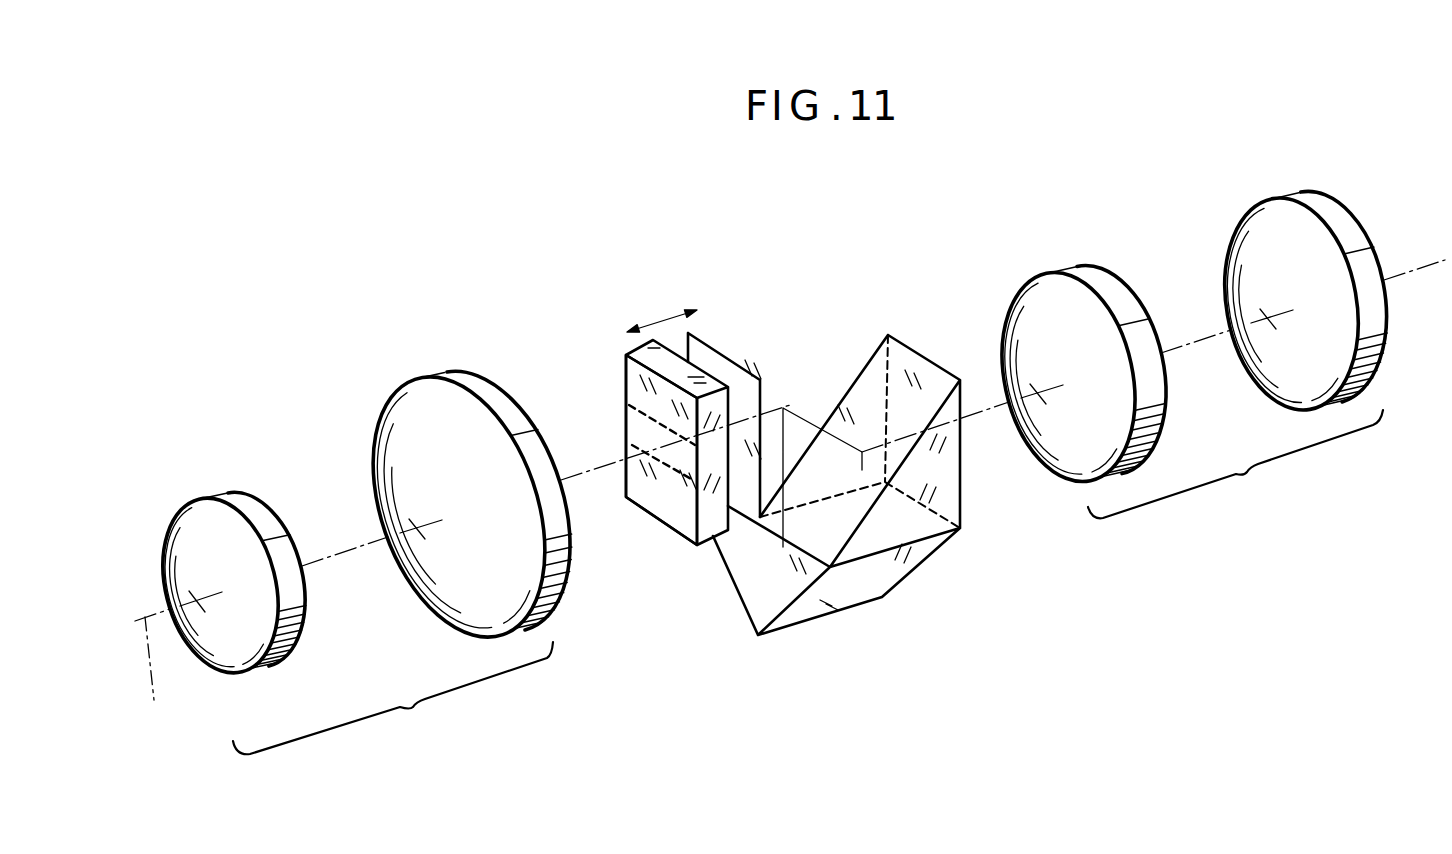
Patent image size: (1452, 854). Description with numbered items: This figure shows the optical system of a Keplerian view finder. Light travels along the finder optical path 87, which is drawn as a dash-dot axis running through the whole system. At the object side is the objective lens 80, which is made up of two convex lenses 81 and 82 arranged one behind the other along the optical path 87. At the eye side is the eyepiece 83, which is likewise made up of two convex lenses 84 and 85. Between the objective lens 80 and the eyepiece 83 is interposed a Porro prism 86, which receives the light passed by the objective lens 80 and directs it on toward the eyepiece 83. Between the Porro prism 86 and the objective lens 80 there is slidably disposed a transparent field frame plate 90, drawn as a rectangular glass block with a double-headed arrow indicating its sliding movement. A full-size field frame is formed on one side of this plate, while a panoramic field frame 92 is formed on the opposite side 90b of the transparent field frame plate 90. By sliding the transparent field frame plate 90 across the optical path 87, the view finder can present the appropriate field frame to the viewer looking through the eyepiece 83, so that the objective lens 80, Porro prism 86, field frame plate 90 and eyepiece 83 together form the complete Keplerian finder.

The objective lens 80 is at (361, 514).
The convex lens 81 is at (231, 494).
The convex lens 82 is at (465, 378).
The eyepiece 83 is at (1185, 317).
The convex lens 84 is at (1090, 281).
The convex lens 85 is at (1315, 211).
The Porro prism 86 is at (910, 573).
The finder optical path 87 is at (157, 676).
The transparent field frame plate 90 is at (633, 491).
The opposite side 90b is at (640, 490).
The panoramic field frame 92 is at (633, 400).